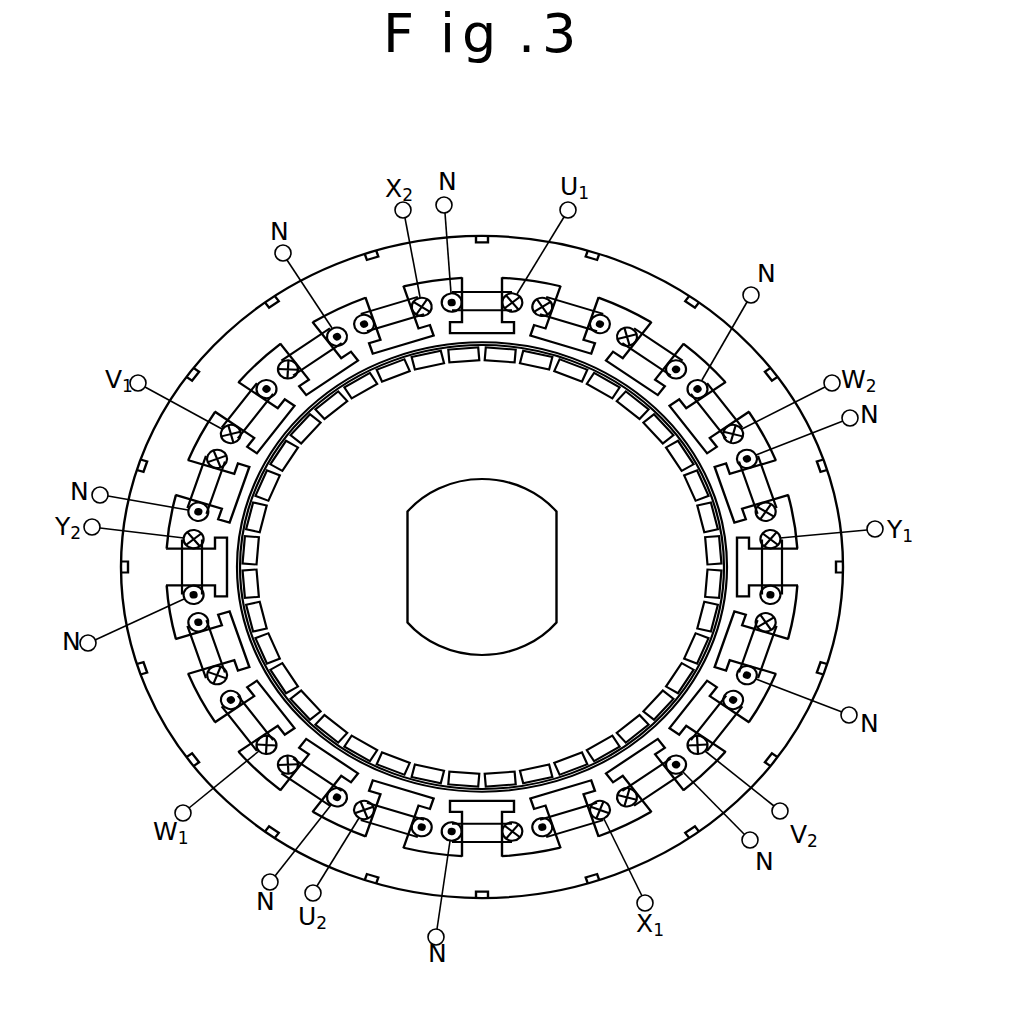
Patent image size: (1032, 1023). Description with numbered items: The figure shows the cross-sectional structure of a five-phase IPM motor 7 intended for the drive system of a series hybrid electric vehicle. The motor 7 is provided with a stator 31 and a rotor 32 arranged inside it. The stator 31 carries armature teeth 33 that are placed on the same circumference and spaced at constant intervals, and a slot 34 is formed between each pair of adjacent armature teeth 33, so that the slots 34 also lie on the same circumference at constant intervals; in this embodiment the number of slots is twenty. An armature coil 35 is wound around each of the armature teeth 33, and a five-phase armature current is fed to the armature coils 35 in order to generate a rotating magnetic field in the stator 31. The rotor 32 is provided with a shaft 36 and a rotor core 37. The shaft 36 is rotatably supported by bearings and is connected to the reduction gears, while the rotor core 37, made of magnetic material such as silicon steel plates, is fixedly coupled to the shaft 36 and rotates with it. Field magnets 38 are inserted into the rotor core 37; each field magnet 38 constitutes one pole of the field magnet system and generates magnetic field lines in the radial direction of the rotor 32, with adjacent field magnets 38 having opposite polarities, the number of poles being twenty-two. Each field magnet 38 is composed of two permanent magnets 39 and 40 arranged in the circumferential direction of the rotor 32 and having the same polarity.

The motor 7 is at (695, 213).
The stator 31 is at (535, 590).
The rotor 32 is at (482, 673).
The armature teeth 33 is at (480, 277).
The slot 34 is at (520, 296).
The armature coil 35 is at (494, 292).
The shaft 36 is at (558, 552).
The rotor core 37 is at (379, 662).
The field magnets 38 is at (482, 566).
The permanent magnet 39 is at (396, 378).
The permanent magnet 40 is at (428, 370).